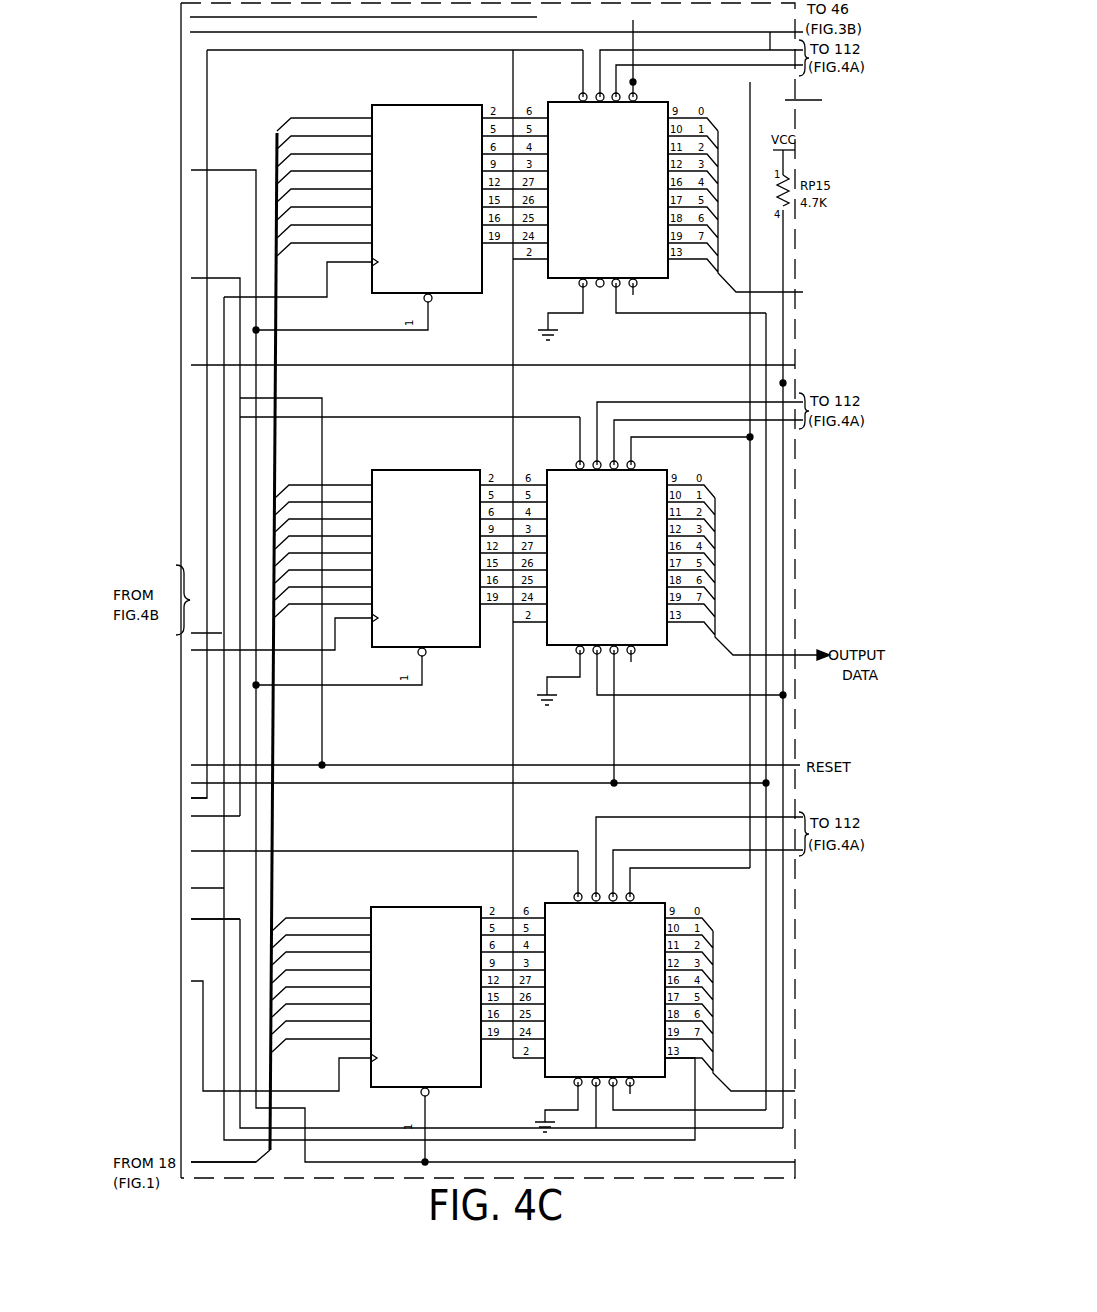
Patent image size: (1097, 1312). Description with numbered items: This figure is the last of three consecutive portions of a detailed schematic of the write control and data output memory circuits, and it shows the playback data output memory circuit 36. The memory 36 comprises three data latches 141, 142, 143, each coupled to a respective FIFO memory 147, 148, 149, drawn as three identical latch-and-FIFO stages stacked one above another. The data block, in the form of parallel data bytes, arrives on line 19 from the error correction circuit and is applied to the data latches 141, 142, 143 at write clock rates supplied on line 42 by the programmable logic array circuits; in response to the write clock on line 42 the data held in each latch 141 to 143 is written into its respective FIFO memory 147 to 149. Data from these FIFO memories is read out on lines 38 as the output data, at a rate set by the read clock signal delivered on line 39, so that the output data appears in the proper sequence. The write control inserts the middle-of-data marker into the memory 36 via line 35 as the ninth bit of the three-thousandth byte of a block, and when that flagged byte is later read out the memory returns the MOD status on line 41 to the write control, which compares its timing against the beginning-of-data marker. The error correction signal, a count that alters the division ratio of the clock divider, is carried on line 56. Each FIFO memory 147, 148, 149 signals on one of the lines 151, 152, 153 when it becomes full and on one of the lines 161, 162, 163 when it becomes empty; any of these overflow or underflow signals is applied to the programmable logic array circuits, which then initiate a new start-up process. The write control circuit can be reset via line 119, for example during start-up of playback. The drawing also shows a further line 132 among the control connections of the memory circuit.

The line 19 is at (216, 1160).
The line 35 is at (202, 921).
The memory 36 is at (819, 102).
The line 38 is at (803, 292).
The line 39 is at (310, 18).
The line 41 is at (198, 892).
The line 42 is at (213, 650).
The line 56 is at (676, 34).
The line 119 is at (740, 764).
The control line 132 is at (716, 364).
The data latch 141 is at (457, 115).
The data latch 142 is at (445, 477).
The data latch 143 is at (450, 912).
The FIFO memory 147 is at (568, 108).
The FIFO memory 148 is at (566, 472).
The FIFO memory 149 is at (565, 910).
The line 151 is at (701, 52).
The line 152 is at (695, 400).
The line 153 is at (738, 816).
The line 161 is at (778, 65).
The line 162 is at (760, 425).
The line 163 is at (738, 850).